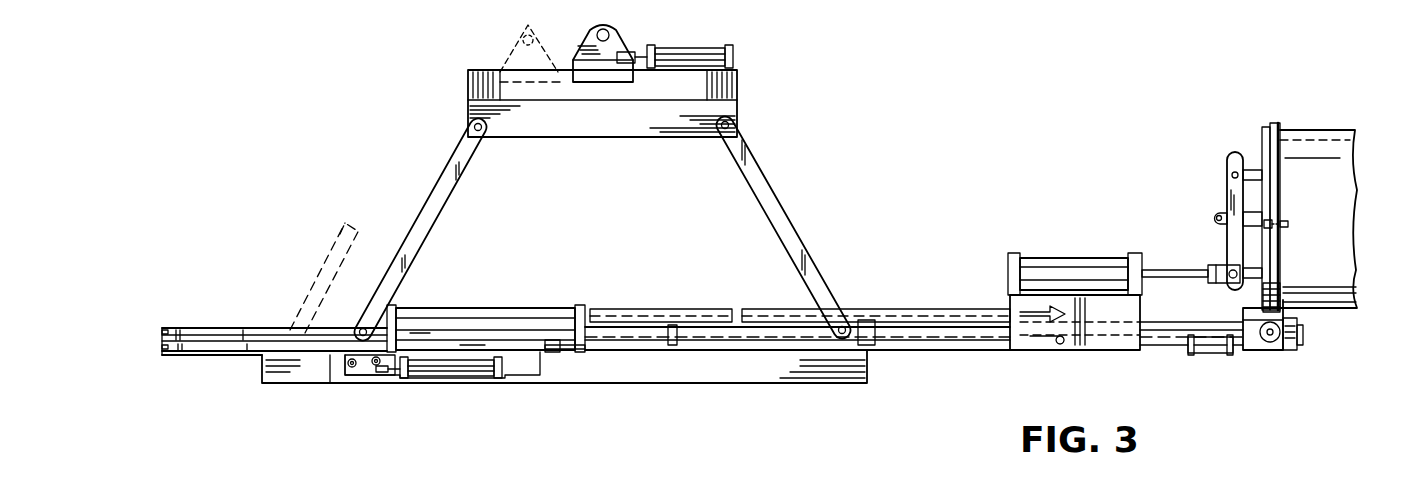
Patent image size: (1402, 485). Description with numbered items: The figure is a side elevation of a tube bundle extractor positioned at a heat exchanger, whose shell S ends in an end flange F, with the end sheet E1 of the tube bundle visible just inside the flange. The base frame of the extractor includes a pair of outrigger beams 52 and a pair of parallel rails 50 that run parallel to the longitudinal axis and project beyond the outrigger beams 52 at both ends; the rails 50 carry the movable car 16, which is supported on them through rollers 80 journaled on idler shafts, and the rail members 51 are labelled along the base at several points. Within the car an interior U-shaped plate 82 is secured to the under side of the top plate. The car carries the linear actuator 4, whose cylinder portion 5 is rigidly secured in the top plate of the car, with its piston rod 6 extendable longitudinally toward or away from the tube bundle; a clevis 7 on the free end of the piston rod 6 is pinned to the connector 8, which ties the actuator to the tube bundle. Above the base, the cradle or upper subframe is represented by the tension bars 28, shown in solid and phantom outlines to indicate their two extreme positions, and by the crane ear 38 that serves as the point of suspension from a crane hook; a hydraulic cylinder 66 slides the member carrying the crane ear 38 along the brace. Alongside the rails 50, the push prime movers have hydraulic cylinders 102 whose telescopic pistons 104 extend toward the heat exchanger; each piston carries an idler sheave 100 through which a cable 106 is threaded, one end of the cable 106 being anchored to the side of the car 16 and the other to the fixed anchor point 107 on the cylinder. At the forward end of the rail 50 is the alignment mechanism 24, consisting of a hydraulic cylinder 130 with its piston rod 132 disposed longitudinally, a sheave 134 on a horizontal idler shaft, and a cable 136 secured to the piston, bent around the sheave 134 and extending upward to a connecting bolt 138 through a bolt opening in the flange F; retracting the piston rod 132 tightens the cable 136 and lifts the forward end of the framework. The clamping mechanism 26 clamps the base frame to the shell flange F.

The on-car linear actuator 4 is at (1098, 240).
The cylinder portion 5 is at (1035, 255).
The piston rod 6 is at (1157, 268).
The clevis 7 is at (1216, 283).
The connector 8 is at (1218, 145).
The movable car 16 is at (1067, 212).
The alignment mechanism 24 is at (1206, 362).
The clamping mechanism 26 is at (1310, 345).
The tension bars 28 is at (393, 265).
The crane ear 38 is at (612, 30).
The rails 50 is at (200, 356).
The rails 51 is at (178, 353).
The outrigger beams 52 is at (720, 383).
The hydraulic cylinder 66 is at (695, 47).
The rollers 80 is at (1005, 325).
The interior U-shaped plate 82 is at (1020, 350).
The idler sheave 100 is at (545, 348).
The hydraulic cylinders 102 is at (438, 308).
The telescopic piston 104 is at (690, 309).
The cable 106 is at (600, 355).
The fixed anchor point 107 is at (585, 305).
The hydraulic cylinder 130 is at (1192, 345).
The piston rod 132 is at (1240, 350).
The sheave 134 is at (1275, 342).
The cable 136 is at (1290, 280).
The connecting bolt 138 is at (1283, 224).
The end sheet E1 is at (1256, 127).
The end flange F is at (1280, 123).
The shell S is at (1315, 145).